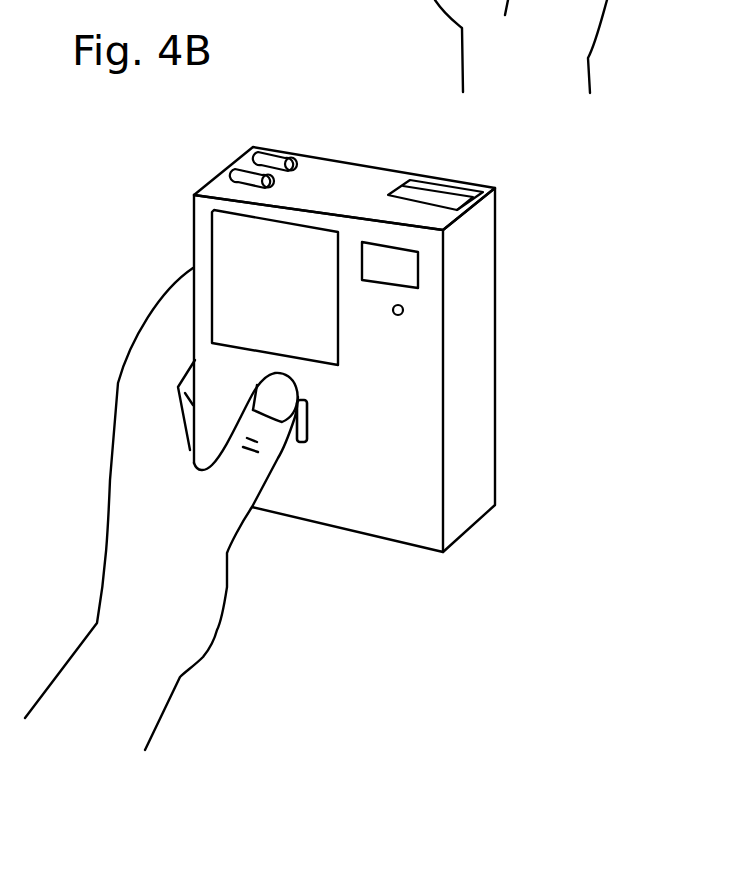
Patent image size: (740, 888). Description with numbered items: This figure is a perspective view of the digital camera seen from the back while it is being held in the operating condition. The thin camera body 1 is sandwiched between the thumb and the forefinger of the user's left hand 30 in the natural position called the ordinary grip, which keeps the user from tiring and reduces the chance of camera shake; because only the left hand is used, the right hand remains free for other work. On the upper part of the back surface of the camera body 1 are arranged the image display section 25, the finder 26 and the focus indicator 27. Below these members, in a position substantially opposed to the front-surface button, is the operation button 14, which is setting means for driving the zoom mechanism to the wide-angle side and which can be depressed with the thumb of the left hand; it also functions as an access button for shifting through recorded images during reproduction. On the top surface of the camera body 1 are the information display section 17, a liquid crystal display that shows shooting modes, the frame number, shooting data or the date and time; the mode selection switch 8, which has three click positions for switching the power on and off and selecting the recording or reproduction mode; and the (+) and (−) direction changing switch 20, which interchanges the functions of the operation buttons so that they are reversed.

The camera body 1 is at (480, 248).
The mode selection switch 8 is at (243, 172).
The (+) and (−) direction changing switch 20 is at (267, 160).
The information display section 17 is at (447, 199).
The image display section 25 is at (305, 308).
The finder 26 is at (410, 272).
The focus indicator 27 is at (403, 311).
The operation button 14 is at (307, 433).
The user's hand 30 is at (193, 593).